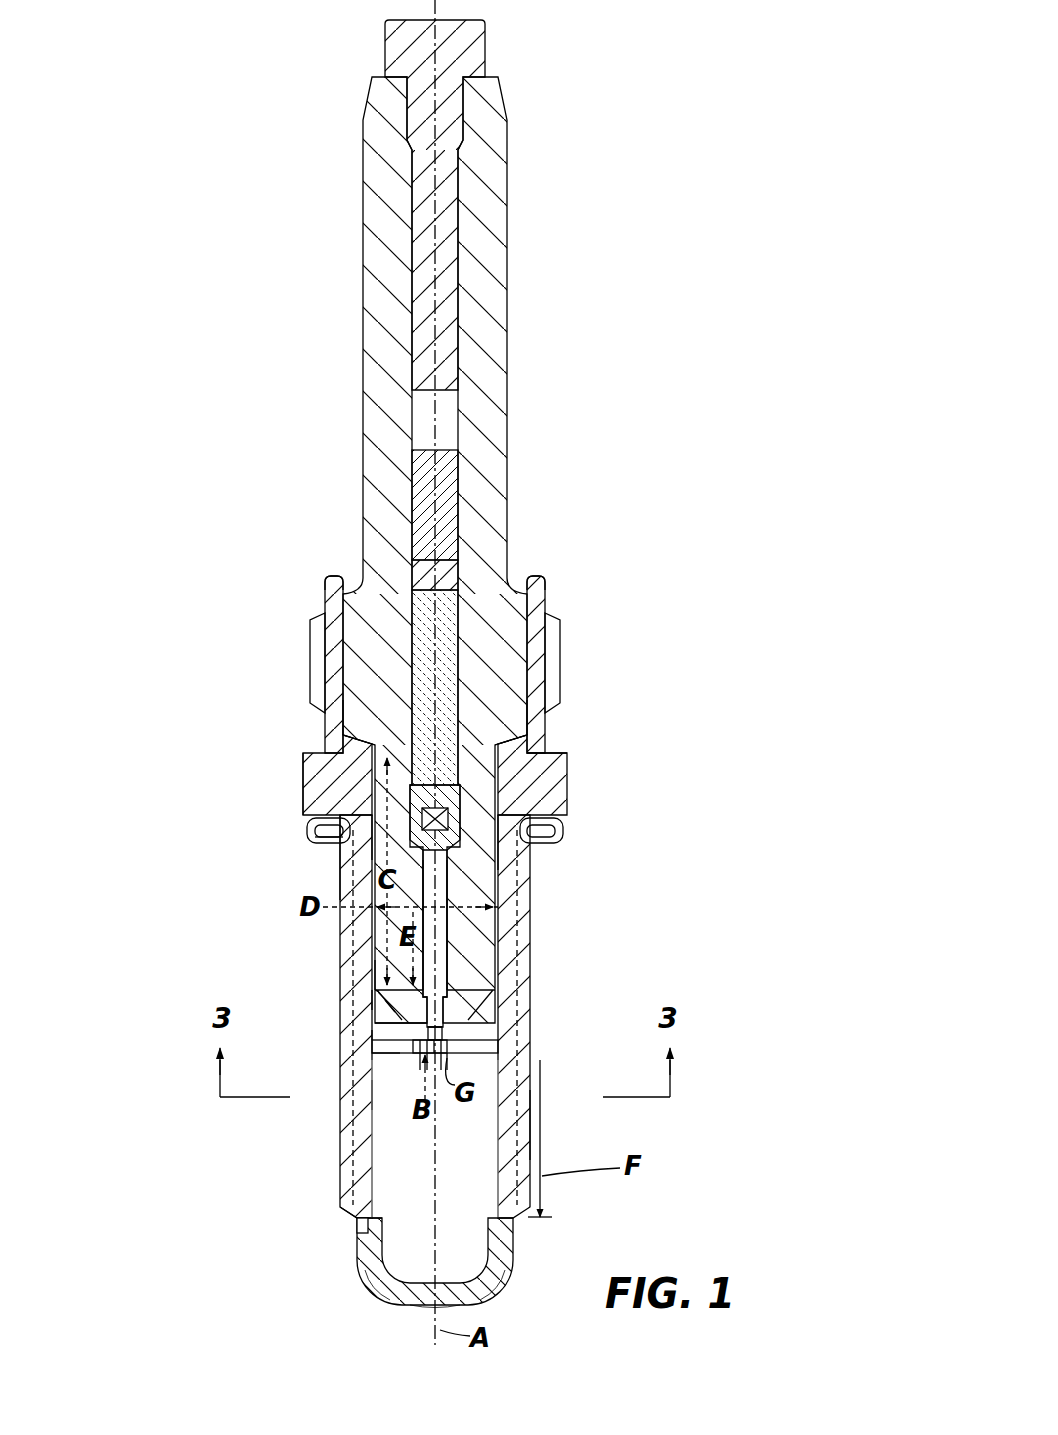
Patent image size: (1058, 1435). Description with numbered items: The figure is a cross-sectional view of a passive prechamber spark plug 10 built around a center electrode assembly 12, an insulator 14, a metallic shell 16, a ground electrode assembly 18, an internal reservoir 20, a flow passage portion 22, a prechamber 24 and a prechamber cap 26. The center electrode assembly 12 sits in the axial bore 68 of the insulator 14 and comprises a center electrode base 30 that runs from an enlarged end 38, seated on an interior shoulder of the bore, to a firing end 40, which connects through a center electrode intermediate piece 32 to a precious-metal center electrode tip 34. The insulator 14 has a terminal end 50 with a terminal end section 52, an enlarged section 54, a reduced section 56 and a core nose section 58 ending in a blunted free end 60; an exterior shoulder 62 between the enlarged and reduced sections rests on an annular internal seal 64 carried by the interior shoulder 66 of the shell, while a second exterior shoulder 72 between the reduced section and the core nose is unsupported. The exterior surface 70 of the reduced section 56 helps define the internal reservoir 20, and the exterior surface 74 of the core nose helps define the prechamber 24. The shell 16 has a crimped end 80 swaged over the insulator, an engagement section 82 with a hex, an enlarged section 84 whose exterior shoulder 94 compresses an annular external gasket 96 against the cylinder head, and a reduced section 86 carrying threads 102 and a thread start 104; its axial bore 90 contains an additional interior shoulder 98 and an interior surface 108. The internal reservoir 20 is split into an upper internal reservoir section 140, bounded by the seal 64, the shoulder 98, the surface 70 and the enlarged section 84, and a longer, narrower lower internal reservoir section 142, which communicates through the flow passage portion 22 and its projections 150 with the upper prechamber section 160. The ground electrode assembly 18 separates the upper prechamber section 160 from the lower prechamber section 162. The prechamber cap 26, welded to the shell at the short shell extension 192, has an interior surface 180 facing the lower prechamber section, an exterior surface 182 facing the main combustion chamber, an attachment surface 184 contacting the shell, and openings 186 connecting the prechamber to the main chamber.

The prechamber spark plug 10 is at (322, 80).
The center electrode assembly 12 is at (442, 975).
The insulator 14 is at (482, 895).
The metallic shell 16 is at (558, 782).
The ground electrode assembly 18 is at (493, 1048).
The internal reservoir 20 is at (362, 875).
The flow passage portion 22 is at (378, 1000).
The prechamber 24 is at (382, 1115).
The prechamber cap 26 is at (360, 1250).
The center electrode base 30 is at (440, 935).
The center electrode intermediate piece 32 is at (460, 1033).
The center electrode tip 34 is at (465, 1043).
The enlarged end 38 is at (565, 826).
The firing end 40 is at (465, 1012).
The terminal end 50 is at (520, 70).
The terminal end section 52 is at (492, 190).
The enlarged section 54 is at (508, 672).
The reduced section 56 is at (500, 858).
The core nose section 58 is at (470, 1003).
The free end 60 is at (410, 1035).
The exterior shoulder 62 is at (542, 772).
The annular internal seal 64 is at (370, 745).
The interior shoulder 66 is at (548, 745).
The axial bore 68 is at (440, 650).
The exterior surface 70 is at (480, 862).
The exterior shoulder 72 is at (390, 1010).
The exterior surface 74 is at (400, 1018).
The crimped end 80 is at (537, 574).
The engagement section 82 is at (541, 632).
The enlarged section 84 is at (545, 766).
The reduced section 86 is at (519, 1110).
The axial bore 90 is at (476, 836).
The exterior shoulder 94 is at (320, 828).
The annular external gasket 96 is at (322, 830).
The interior shoulder 98 is at (370, 790).
The threads 102 is at (532, 1140).
The thread start 104 is at (543, 1212).
The interior surface 108 is at (490, 1082).
The upper internal reservoir section 140 is at (383, 756).
The lower internal reservoir section 142 is at (375, 847).
The projections 150 is at (375, 973).
The upper prechamber section 160 is at (412, 1055).
The lower prechamber section 162 is at (392, 1098).
The interior surface 180 is at (384, 1232).
The exterior surface 182 is at (418, 1305).
The attachment surface 184 is at (352, 1218).
The openings 186 is at (374, 1282).
The shell extension 192 is at (357, 1224).